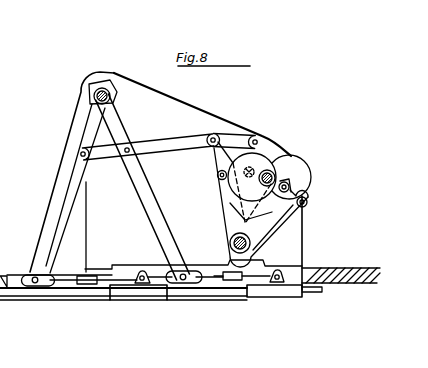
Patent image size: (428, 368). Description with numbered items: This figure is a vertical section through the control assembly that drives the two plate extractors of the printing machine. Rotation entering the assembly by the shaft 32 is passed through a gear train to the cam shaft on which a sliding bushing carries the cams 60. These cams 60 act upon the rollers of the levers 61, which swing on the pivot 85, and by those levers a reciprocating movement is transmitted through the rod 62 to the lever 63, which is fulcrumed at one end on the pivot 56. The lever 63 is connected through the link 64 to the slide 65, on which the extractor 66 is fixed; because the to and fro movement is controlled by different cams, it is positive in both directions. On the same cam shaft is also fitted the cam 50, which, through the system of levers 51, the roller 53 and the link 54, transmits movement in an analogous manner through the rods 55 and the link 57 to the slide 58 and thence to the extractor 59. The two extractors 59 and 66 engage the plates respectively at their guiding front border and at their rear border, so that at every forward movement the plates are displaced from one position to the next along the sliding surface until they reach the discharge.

The shaft 32 is at (217, 176).
The cam 50 is at (265, 165).
The lever 51 is at (227, 207).
The roller 53 is at (287, 184).
The link 54 is at (168, 147).
The rod 55 is at (60, 192).
The pivot 56 is at (110, 93).
The link 57 is at (70, 284).
The slide 58 is at (130, 300).
The extractor 59 is at (30, 290).
The cam 60 is at (291, 162).
The lever 61 is at (287, 218).
The rod 62 is at (240, 138).
The lever 63 is at (147, 212).
The link 64 is at (206, 278).
The slide 65 is at (278, 282).
The extractor 66 is at (302, 282).
The pivot 85 is at (243, 255).